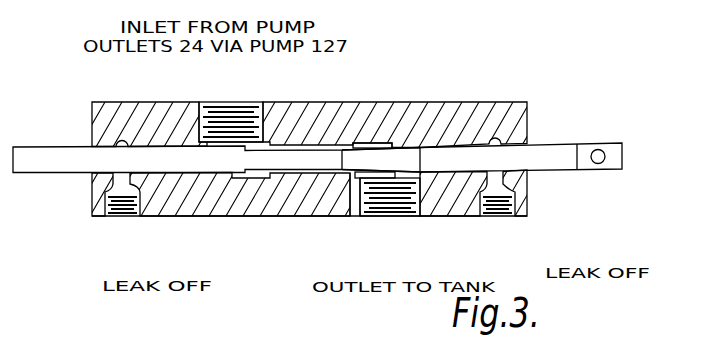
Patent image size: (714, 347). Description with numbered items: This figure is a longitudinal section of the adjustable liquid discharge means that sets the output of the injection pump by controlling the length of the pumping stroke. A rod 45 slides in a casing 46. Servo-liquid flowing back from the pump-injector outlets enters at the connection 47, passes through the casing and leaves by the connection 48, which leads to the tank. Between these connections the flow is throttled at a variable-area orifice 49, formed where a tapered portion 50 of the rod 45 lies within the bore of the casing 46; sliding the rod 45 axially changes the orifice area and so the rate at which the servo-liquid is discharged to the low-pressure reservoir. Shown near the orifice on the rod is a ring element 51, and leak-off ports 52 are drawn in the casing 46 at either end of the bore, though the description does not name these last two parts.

The rod 45 is at (552, 153).
The casing 46 is at (338, 125).
The connection 47 is at (227, 118).
The connection 48 is at (398, 205).
The variable-area orifice 49 is at (348, 176).
The tapered portion 50 is at (375, 150).
The sleeve ring 51 is at (365, 143).
The leak-off port 52 is at (116, 206).